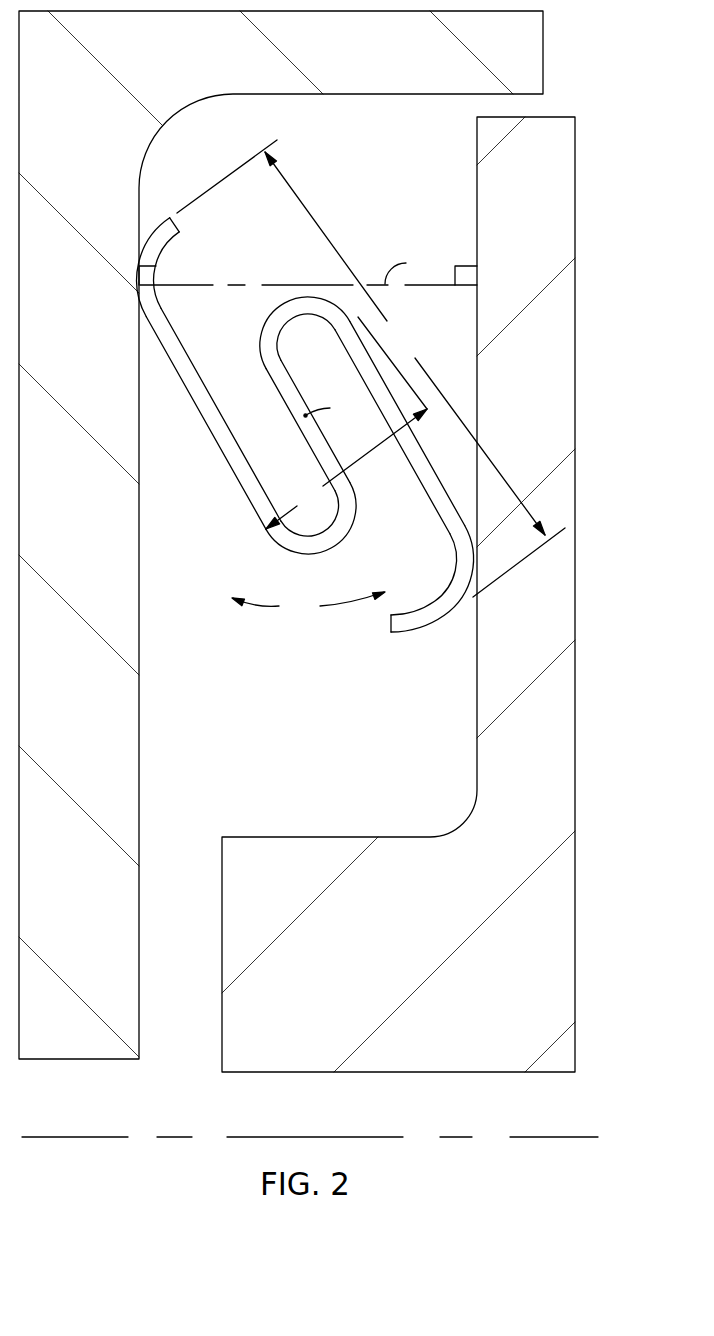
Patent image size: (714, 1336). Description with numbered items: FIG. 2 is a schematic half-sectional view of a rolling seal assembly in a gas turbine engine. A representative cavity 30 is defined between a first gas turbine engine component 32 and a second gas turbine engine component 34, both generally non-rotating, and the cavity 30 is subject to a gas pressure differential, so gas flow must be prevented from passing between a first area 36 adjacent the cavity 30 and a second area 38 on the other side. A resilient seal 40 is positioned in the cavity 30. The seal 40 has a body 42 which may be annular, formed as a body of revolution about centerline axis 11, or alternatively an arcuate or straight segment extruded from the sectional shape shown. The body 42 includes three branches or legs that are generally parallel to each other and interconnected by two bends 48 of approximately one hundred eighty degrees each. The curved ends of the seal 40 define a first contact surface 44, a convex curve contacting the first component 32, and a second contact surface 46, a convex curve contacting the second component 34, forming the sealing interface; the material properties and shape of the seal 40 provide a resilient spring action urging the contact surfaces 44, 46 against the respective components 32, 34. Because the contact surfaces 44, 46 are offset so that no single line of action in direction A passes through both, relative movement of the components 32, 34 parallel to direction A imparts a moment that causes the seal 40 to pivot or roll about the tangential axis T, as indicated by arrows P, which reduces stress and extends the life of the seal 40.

The centerline axis 11 is at (557, 1137).
The cavity 30 is at (307, 466).
The first gas turbine engine component 32 is at (96, 136).
The second gas turbine engine component 34 is at (508, 880).
The first area 36 is at (172, 1116).
The second area 38 is at (622, 78).
The resilient seal 40 is at (338, 208).
The body 42 is at (227, 441).
The first contact surface 44 is at (141, 294).
The second contact surface 46 is at (477, 553).
The bends 48 is at (312, 307).